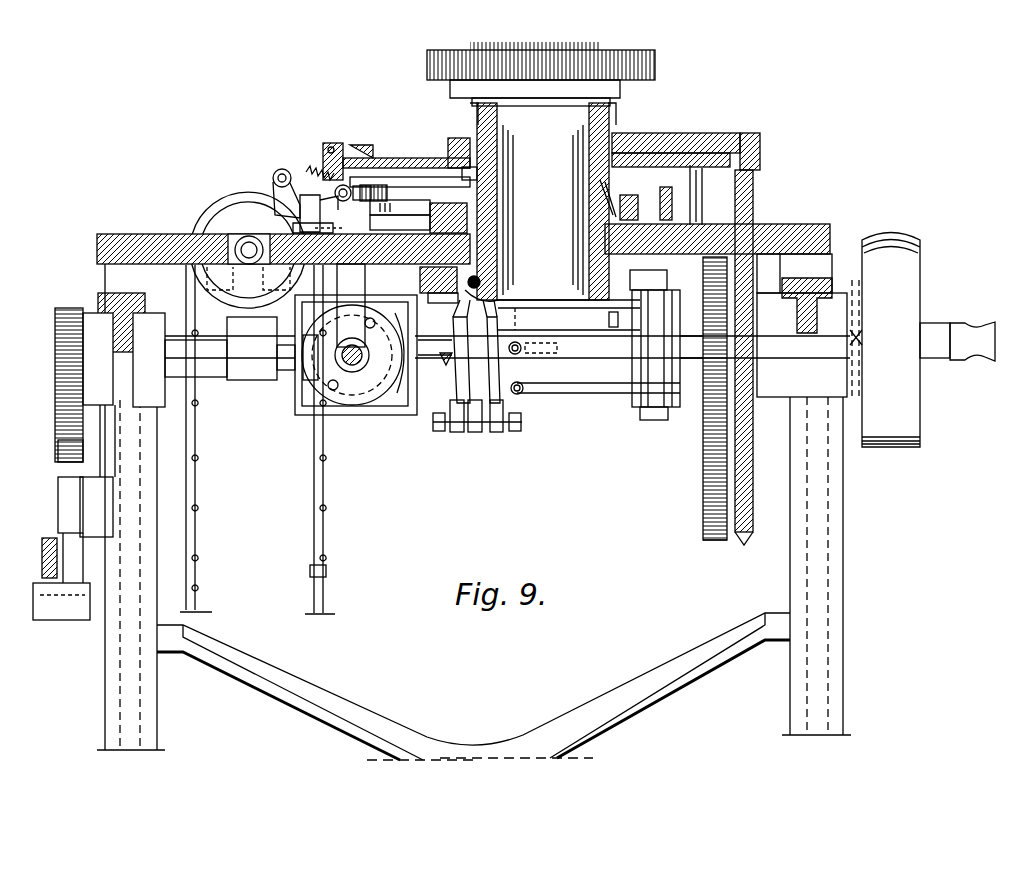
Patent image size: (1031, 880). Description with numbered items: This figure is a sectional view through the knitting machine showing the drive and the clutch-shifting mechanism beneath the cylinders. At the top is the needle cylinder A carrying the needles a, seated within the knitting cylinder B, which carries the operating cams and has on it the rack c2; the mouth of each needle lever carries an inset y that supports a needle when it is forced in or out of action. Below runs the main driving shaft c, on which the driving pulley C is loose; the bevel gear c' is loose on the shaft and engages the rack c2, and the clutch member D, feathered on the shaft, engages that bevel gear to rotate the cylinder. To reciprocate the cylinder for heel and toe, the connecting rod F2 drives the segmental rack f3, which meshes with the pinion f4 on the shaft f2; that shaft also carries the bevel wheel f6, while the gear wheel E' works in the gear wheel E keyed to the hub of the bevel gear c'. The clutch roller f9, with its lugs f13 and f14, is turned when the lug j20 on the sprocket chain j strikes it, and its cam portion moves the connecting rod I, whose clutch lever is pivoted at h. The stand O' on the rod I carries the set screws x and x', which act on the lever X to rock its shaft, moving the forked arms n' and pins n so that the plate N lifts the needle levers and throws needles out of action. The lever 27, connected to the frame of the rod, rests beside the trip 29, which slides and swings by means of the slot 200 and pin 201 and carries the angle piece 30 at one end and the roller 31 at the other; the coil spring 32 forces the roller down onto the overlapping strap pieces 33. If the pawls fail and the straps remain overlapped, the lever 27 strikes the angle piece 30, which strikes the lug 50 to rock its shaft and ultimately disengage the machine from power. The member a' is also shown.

The needles a is at (541, 119).
The needle cylinder A is at (470, 118).
The inset y is at (590, 184).
The knitting cylinder B is at (448, 150).
The rack c2 is at (780, 162).
The coil spring 32 is at (318, 160).
The trip 29 is at (277, 170).
The lug 50 is at (300, 205).
The angle piece 30 is at (248, 196).
The lever 27 is at (300, 225).
The pin 201 is at (345, 185).
The slot 200 is at (358, 188).
The roller 31 is at (410, 189).
The strap metallic pieces 33 is at (418, 216).
The index wedge a' is at (463, 180).
The plate N is at (672, 200).
The pins n is at (642, 272).
The forked arms n' is at (569, 327).
The pivot of clutch lever h is at (300, 415).
The clutch roller f9 is at (336, 392).
The lug f13 is at (372, 318).
The lug f14 is at (338, 420).
The bevel wheel f6 is at (400, 395).
The connecting rod I is at (460, 338).
The hub f is at (228, 320).
The shaft f2 is at (450, 365).
The pinion f4 is at (56, 315).
The segmental rack f3 is at (58, 443).
The connecting rod F2 is at (42, 566).
The sprocket chain j is at (196, 507).
The lug j20 is at (327, 572).
The lever X is at (477, 433).
The set screw x is at (433, 441).
The set screw x' is at (502, 433).
The stand O' is at (530, 441).
The main driving shaft c is at (595, 397).
The clutch member D is at (636, 410).
The gear wheel E is at (697, 398).
The gear wheel E' is at (702, 562).
The bevel gear c' is at (750, 372).
The driving pulley C is at (902, 305).